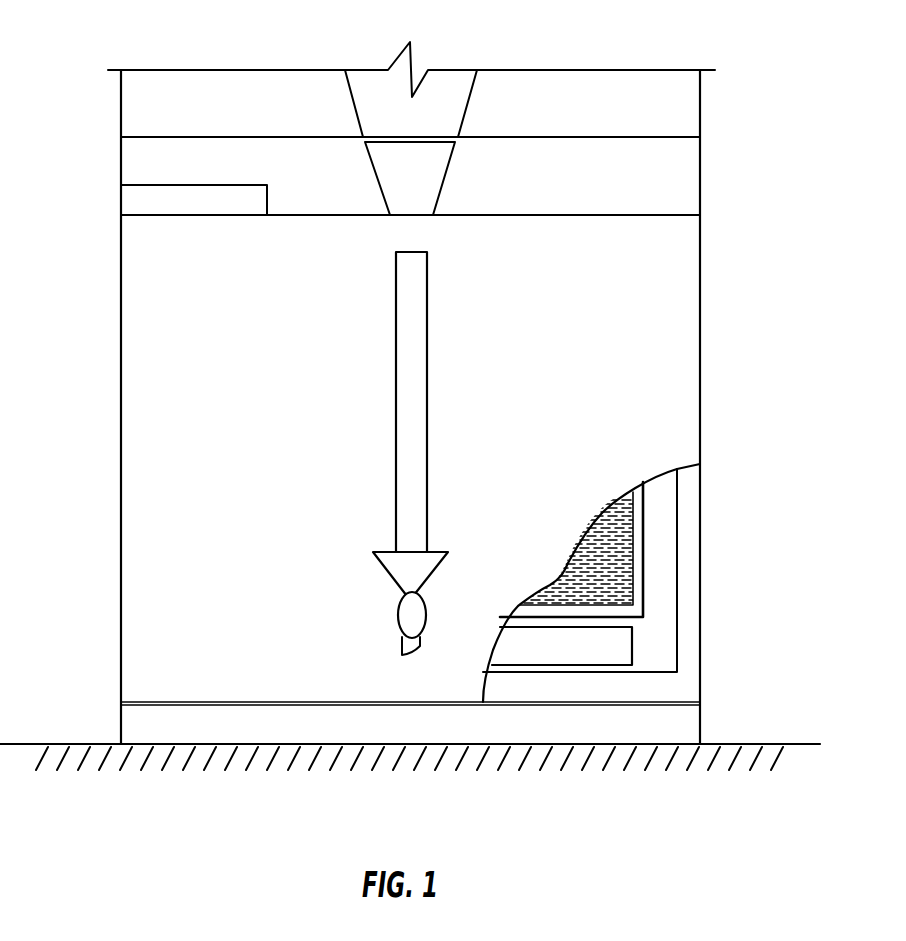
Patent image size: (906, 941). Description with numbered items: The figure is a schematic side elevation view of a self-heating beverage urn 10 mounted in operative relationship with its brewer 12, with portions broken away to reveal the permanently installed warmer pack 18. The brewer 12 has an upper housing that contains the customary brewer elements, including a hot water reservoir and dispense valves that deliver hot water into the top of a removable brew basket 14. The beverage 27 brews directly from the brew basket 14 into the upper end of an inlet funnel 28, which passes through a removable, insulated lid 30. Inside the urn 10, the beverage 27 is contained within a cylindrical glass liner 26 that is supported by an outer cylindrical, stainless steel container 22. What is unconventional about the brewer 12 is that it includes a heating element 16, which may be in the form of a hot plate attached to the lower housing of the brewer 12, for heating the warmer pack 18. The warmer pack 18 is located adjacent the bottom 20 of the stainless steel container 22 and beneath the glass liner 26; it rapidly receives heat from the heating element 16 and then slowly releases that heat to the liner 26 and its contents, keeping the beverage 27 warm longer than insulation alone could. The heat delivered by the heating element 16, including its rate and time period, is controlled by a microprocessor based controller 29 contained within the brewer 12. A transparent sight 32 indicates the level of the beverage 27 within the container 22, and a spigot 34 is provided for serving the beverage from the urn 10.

The self-heating beverage urn 10 is at (665, 284).
The brewer 12 is at (675, 83).
The removable brew basket 14 is at (363, 88).
The heating element 16 is at (688, 727).
The warmer pack 18 is at (618, 652).
The bottom 20 is at (597, 687).
The outer cylindrical stainless steel container 22 is at (688, 479).
The glass liner 26 is at (642, 565).
The beverage 27 is at (615, 522).
The inlet funnel 28 is at (440, 153).
The microprocessor based controller 29 is at (121, 203).
The removable insulated lid 30 is at (675, 177).
The transparent sight 32 is at (400, 372).
The spigot 34 is at (400, 618).